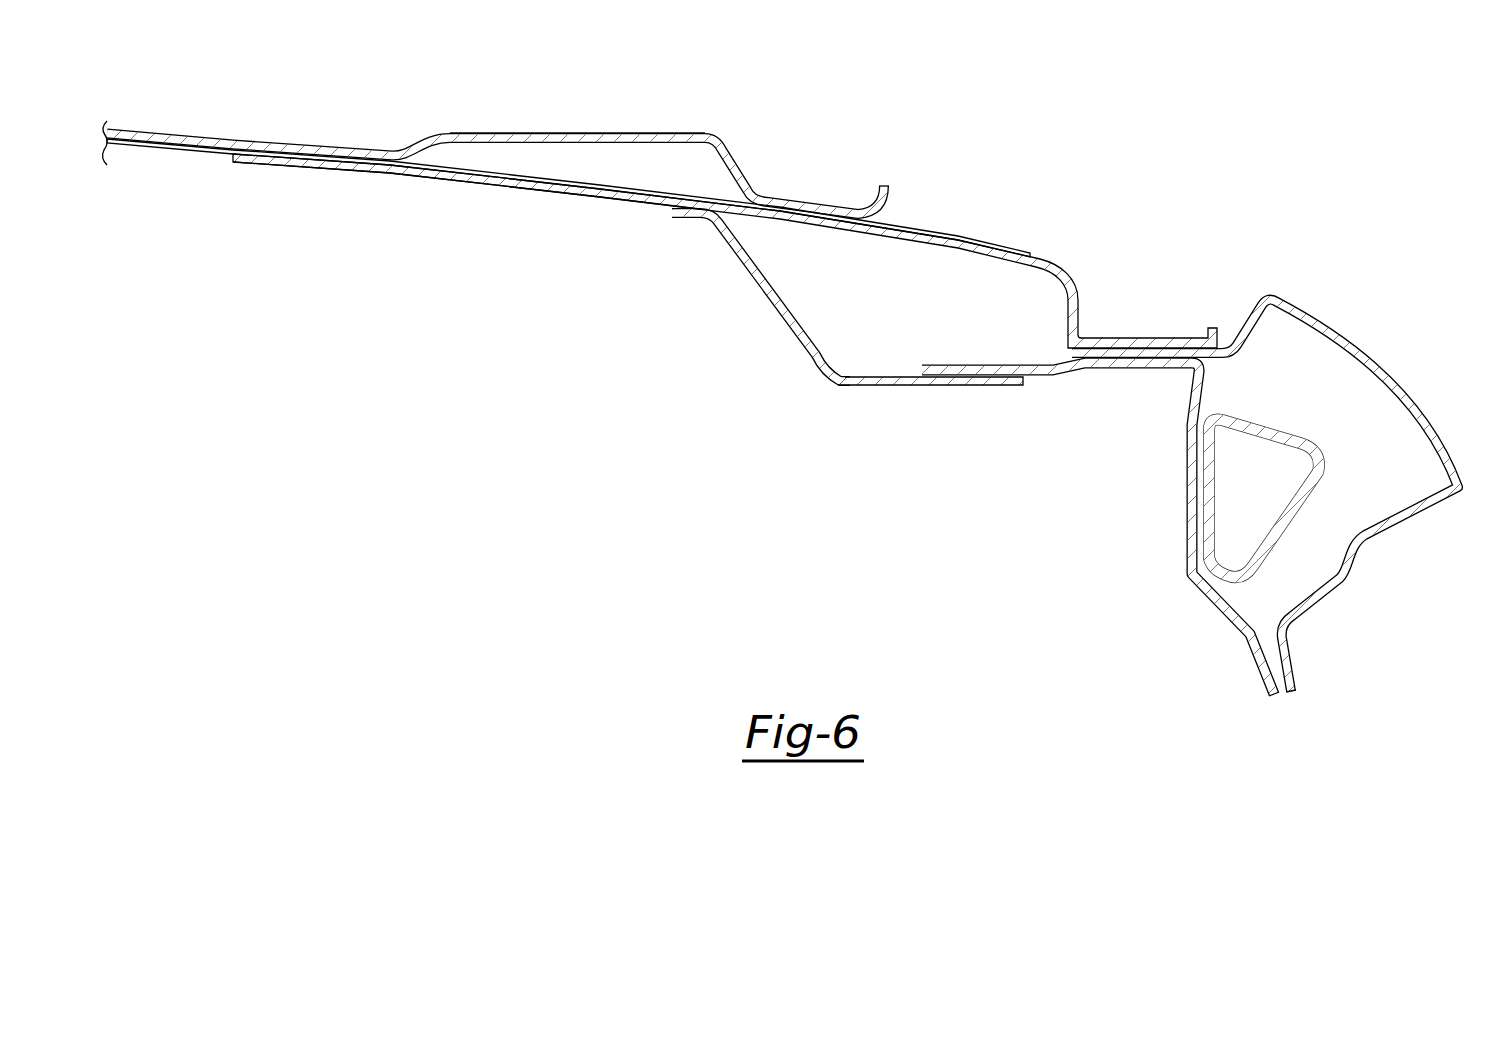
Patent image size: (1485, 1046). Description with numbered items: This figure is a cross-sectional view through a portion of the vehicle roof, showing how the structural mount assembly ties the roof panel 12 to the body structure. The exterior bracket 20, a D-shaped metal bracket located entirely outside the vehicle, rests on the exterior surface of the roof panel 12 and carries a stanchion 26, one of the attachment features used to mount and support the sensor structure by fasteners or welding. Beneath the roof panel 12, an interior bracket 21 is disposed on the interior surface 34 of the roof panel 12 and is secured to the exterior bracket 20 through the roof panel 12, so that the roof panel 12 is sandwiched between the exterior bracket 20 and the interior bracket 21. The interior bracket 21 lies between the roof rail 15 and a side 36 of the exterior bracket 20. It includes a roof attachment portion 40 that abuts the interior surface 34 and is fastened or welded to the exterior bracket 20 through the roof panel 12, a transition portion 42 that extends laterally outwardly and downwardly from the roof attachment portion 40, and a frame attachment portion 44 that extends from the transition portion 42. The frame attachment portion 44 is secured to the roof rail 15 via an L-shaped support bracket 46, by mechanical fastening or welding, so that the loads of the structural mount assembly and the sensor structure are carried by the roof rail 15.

The roof panel 12 is at (958, 236).
The roof rail 15 is at (1372, 360).
The exterior bracket 20 is at (286, 115).
The interior bracket 21 is at (247, 212).
The stanchion 26 is at (482, 133).
The interior surface 34 is at (170, 152).
The side 36 is at (350, 141).
The roof attachment portion 40 is at (397, 172).
The transition portion 42 is at (752, 287).
The frame attachment portion 44 is at (903, 388).
The L-shaped support bracket 46 is at (1230, 619).